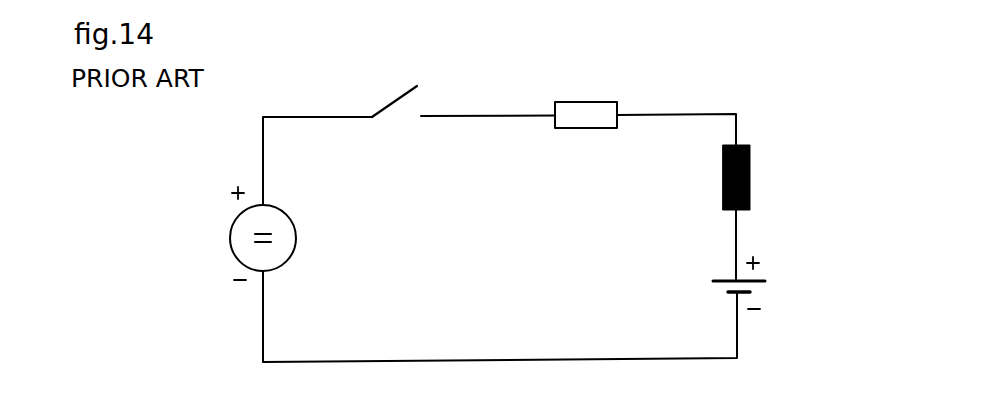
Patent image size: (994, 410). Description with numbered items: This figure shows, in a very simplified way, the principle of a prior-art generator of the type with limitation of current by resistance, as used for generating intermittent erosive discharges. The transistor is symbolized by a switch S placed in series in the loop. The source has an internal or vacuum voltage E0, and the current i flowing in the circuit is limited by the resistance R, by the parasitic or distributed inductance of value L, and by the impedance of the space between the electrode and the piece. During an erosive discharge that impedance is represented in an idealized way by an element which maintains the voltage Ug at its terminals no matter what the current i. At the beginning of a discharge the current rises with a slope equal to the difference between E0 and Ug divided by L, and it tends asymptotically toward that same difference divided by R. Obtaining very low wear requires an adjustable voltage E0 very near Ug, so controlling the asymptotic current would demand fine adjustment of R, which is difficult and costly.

The internal voltage of the source E0 is at (287, 238).
The switch S is at (395, 102).
The resistance R is at (578, 110).
The current i is at (690, 113).
The parasitic or distributed inductance L is at (750, 182).
The electrode-piece voltage Ug is at (777, 280).